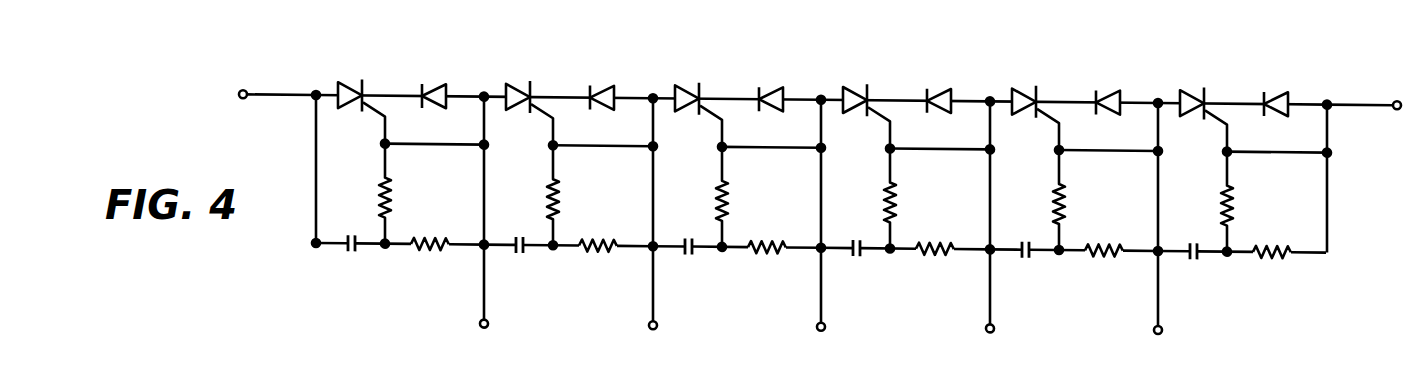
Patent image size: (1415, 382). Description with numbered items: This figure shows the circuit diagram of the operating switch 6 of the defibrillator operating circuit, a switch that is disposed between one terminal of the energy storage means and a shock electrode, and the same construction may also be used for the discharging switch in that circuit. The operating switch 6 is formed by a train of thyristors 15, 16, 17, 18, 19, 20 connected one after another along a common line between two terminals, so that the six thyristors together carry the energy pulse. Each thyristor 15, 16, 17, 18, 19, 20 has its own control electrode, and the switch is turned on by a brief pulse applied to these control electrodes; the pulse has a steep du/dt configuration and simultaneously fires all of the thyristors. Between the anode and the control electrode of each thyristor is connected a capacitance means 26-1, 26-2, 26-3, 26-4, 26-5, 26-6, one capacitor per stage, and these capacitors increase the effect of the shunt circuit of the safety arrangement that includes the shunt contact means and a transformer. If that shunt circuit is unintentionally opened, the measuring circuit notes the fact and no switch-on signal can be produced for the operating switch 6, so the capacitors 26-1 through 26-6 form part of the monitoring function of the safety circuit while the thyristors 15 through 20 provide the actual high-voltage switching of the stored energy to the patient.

The thyristor 15 is at (353, 94).
The thyristor 16 is at (521, 96).
The thyristor 17 is at (690, 97).
The thyristor 18 is at (858, 99).
The thyristor 19 is at (1027, 100).
The thyristor 20 is at (1195, 102).
The capacitance means 26-1 is at (376, 264).
The capacitance means 26-2 is at (544, 266).
The capacitance means 26-3 is at (713, 268).
The capacitance means 26-4 is at (881, 269).
The capacitance means 26-5 is at (1050, 271).
The capacitance means 26-6 is at (1218, 272).
The operating switch 6 is at (1311, 274).